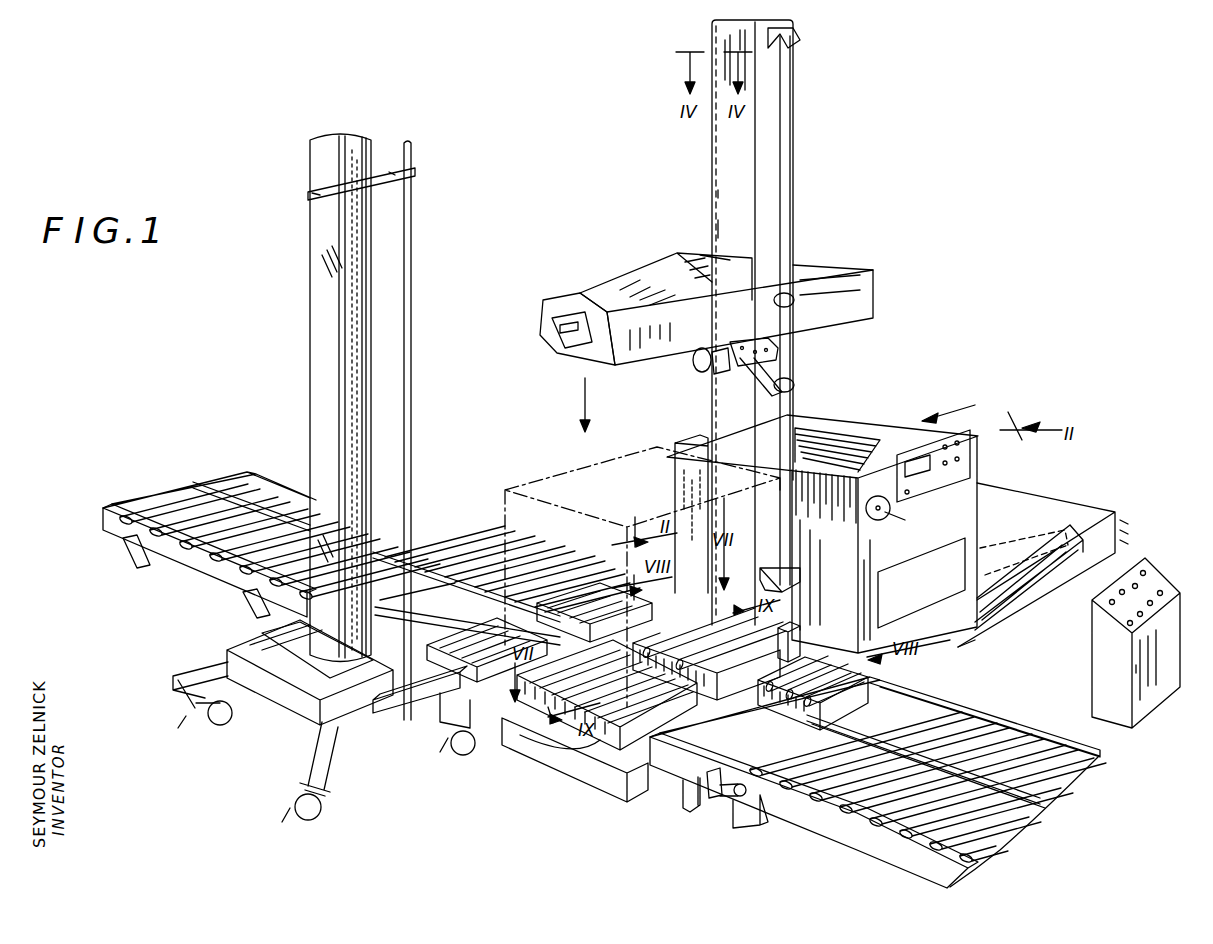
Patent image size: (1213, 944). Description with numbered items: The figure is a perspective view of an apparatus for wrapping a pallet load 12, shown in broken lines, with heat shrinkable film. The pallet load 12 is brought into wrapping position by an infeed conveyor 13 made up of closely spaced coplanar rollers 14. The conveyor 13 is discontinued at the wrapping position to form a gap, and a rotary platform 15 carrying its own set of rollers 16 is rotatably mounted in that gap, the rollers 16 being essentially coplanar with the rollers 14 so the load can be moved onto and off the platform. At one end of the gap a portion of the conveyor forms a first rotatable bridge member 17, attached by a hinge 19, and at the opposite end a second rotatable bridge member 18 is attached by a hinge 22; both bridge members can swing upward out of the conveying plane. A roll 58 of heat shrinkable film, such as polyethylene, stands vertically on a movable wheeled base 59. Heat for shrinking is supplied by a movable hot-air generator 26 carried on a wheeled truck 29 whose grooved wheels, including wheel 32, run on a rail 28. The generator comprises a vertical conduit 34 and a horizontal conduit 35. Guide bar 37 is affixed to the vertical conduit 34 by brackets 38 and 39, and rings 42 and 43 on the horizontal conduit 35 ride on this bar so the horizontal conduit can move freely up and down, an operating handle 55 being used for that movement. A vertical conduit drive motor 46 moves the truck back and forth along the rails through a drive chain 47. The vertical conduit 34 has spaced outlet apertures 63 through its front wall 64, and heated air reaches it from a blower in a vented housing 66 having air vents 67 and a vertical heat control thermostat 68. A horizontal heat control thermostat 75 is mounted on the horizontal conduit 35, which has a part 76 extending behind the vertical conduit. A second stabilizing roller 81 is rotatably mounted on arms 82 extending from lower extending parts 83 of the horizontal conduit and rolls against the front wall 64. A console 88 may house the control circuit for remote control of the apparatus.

The pallet load 12 is at (614, 501).
The infeed conveyor 13 is at (240, 535).
The rollers 14 is at (200, 550).
The rotary platform 15 is at (575, 740).
The rollers 16 is at (625, 757).
The first rotatable bridge member 17 is at (667, 757).
The second rotatable bridge member 18 is at (600, 582).
The hinge 19 is at (714, 796).
The hinge 22 is at (420, 689).
The hot-air generator 26 is at (672, 249).
The rail 28 is at (940, 660).
The wheeled truck 29 is at (915, 665).
The wheel 32 is at (972, 640).
The vertical conduit 34 is at (722, 165).
The horizontal conduit 35 is at (642, 355).
The guide bar 37 is at (790, 108).
The bracket 38 is at (795, 48).
The bracket 39 is at (800, 588).
The ring 42 is at (792, 297).
The ring 43 is at (792, 384).
The vertical conduit drive motor 46 is at (1040, 500).
The drive chain 47 is at (1008, 590).
The operating handle 55 is at (880, 522).
The roll of heat shrinkable film 58 is at (310, 291).
The movable wheeled base 59 is at (290, 712).
The outlet apertures 63 is at (712, 236).
The front wall 64 is at (712, 191).
The vented housing 66 is at (824, 525).
The air vents 67 is at (852, 432).
The vertical heat control thermostat 68 is at (925, 470).
The horizontal heat control thermostat 75 is at (562, 305).
The part of horizontal conduit 76 is at (873, 302).
The second stabilizing roller 81 is at (700, 370).
The arms 82 is at (728, 372).
The lower extending parts 83 is at (778, 352).
The console 88 is at (1127, 660).